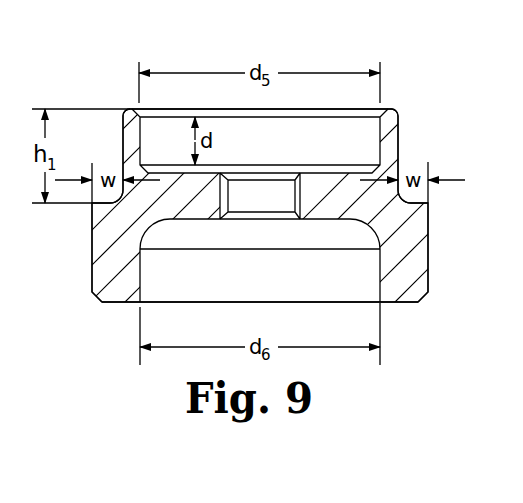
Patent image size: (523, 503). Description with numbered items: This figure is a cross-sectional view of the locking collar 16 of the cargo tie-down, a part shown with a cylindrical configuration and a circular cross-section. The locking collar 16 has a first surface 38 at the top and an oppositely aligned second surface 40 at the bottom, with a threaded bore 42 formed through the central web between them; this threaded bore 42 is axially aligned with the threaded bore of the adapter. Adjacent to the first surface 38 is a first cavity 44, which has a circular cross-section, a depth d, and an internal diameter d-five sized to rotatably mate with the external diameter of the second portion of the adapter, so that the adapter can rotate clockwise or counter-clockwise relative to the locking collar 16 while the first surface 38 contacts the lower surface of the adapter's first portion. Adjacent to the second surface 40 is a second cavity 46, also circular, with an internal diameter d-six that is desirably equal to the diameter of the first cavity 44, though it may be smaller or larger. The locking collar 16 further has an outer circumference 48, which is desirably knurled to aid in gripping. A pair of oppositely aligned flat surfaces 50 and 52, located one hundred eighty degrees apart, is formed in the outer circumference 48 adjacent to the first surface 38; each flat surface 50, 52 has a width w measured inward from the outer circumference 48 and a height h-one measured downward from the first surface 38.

The locking collar 16 is at (402, 41).
The first surface 38 is at (387, 109).
The second surface 40 is at (403, 303).
The threaded bore 42 is at (294, 182).
The first cavity 44 is at (142, 135).
The second cavity 46 is at (141, 282).
The outer circumference 48 is at (428, 257).
The flat surface 50 is at (123, 147).
The flat surface 52 is at (398, 133).